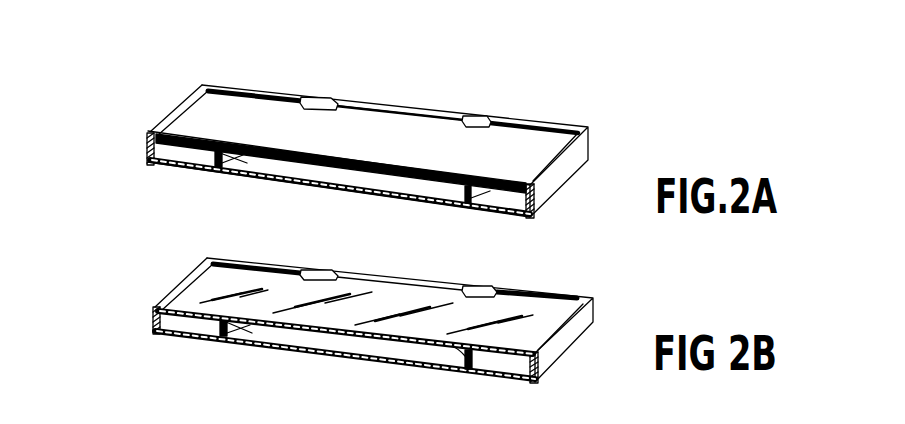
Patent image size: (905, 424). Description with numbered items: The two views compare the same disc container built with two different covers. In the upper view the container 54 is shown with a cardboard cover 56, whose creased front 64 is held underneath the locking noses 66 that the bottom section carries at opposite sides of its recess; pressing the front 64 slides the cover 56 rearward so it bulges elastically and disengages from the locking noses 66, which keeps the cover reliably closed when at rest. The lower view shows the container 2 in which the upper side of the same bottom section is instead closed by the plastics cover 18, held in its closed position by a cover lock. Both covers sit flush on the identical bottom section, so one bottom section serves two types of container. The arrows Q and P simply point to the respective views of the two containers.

In FIG. 2A, the container 54 is at (147, 118).
In FIG. 2A, the cardboard cover 56 is at (330, 143).
In FIG. 2A, the front of the cardboard cover 64 is at (375, 108).
In FIG. 2A, the locking noses 66 is at (321, 101).
In FIG. 2B, the container 2 is at (157, 285).
In FIG. 2B, the cover 18 is at (325, 313).
In FIG. 2A, the direction Q is at (421, 85).
In FIG. 2B, the direction P is at (393, 258).